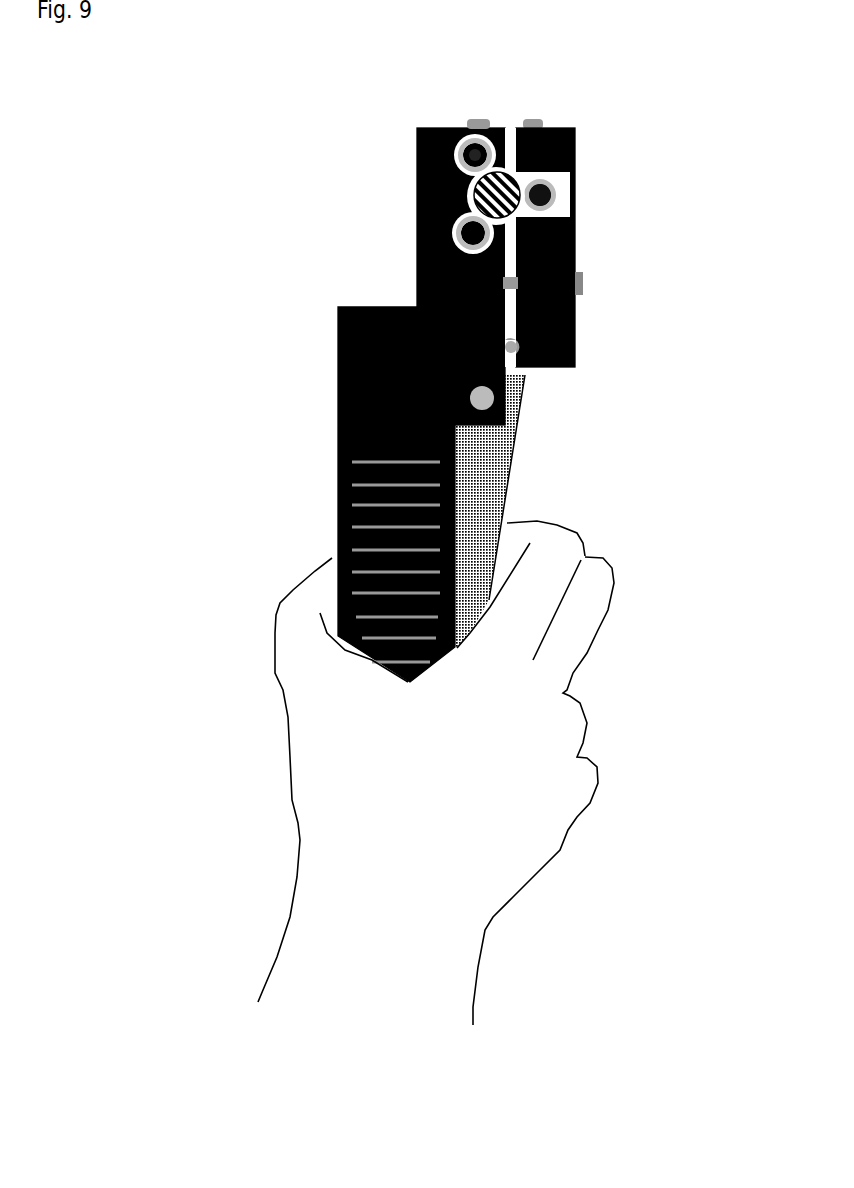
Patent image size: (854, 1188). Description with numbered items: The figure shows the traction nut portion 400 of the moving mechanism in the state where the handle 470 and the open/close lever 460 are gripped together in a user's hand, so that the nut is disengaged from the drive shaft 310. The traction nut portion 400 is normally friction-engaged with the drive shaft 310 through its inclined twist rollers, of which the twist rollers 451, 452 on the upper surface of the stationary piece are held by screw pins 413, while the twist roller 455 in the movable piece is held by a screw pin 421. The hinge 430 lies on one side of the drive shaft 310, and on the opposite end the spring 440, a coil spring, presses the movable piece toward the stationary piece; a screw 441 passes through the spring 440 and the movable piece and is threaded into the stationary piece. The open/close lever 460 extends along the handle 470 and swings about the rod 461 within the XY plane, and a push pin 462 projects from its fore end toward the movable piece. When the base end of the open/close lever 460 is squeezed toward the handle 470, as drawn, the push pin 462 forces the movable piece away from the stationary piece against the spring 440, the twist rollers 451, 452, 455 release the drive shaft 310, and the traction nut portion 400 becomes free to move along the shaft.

The traction nut portion 400 is at (363, 112).
The drive shaft 310 is at (514, 184).
The screw pins 413 is at (470, 138).
The screw pins 421 is at (540, 190).
The hinge 430 is at (510, 128).
The spring 440 is at (580, 243).
The screw 441 is at (582, 281).
The twist roller 451 is at (465, 142).
The twist roller 452 is at (461, 232).
The twist roller 455 is at (560, 192).
The open/close lever 460 is at (486, 453).
The rod 461 is at (486, 400).
The push pin 462 is at (516, 350).
The handle 470 is at (338, 435).